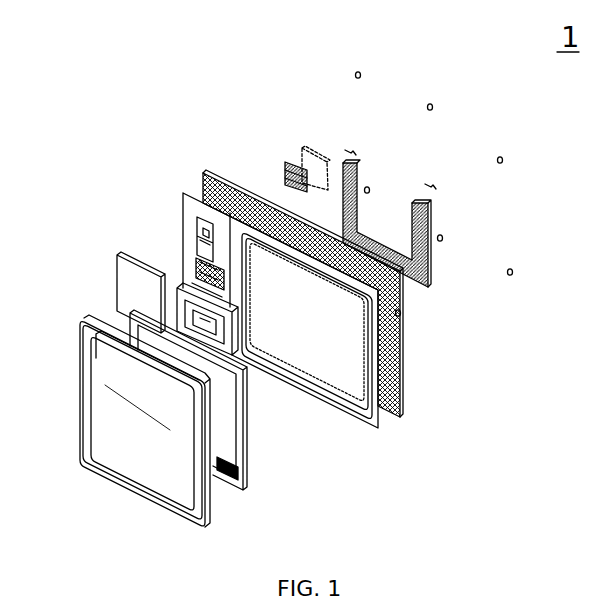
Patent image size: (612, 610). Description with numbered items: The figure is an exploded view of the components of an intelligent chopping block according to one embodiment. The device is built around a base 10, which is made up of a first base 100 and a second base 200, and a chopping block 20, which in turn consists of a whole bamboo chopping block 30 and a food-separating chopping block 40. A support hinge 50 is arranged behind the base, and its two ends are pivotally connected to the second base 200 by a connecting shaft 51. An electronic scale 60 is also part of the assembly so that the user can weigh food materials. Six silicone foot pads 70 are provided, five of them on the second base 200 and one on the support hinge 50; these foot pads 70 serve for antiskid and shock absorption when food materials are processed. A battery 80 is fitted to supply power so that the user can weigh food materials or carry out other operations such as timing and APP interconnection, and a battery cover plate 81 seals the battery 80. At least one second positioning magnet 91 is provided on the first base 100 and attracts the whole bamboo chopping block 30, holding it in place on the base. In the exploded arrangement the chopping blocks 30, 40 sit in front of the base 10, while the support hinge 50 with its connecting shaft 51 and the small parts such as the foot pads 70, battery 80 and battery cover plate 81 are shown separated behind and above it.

The base 10 is at (480, 480).
The chopping block 20 is at (330, 508).
The whole bamboo chopping block 30 is at (218, 497).
The food-separating chopping block 40 is at (223, 440).
The support hinge 50 is at (433, 205).
The connecting shaft 51 is at (433, 190).
The electronic scale 60 is at (132, 290).
The silicone foot pads 70 is at (354, 73).
The battery 80 is at (287, 168).
The battery cover plate 81 is at (305, 156).
The second positioning magnet 91 is at (400, 316).
The first base 100 is at (330, 410).
The second base 200 is at (393, 415).